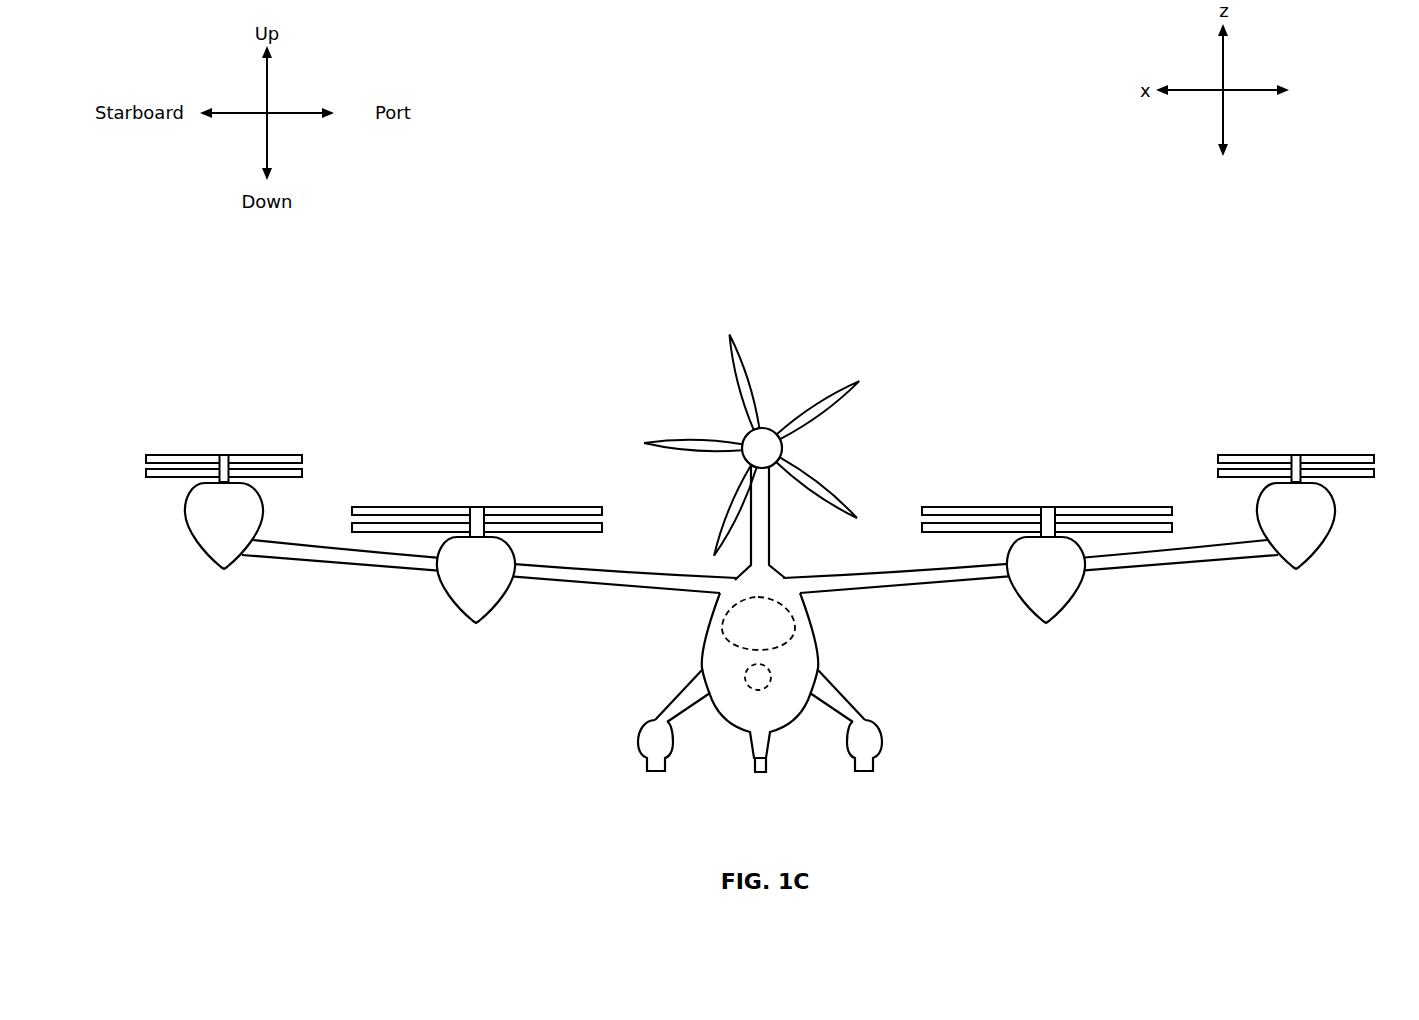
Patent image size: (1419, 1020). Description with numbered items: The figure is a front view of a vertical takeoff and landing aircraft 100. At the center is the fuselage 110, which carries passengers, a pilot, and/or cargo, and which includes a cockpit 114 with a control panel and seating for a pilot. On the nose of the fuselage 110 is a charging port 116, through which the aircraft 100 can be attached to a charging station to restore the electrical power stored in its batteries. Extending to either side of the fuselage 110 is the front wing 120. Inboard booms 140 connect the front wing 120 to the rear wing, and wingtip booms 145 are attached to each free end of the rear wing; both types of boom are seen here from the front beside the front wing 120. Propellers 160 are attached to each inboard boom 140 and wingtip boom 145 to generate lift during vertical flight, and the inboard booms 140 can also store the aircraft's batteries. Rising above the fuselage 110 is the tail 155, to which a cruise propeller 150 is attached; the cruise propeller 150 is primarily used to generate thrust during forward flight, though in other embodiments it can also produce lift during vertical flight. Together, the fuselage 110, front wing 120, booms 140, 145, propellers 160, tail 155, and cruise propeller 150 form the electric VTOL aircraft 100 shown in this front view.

The aircraft 100 is at (846, 66).
The fuselage 110 is at (712, 650).
The cockpit 114 is at (770, 628).
The charging port 116 is at (757, 687).
The front wing 120 is at (1210, 562).
The inboard boom 140 is at (462, 562).
The wingtip boom 145 is at (218, 517).
The cruise propeller 150 is at (730, 367).
The tail 155 is at (750, 538).
The propeller 160 is at (1303, 455).